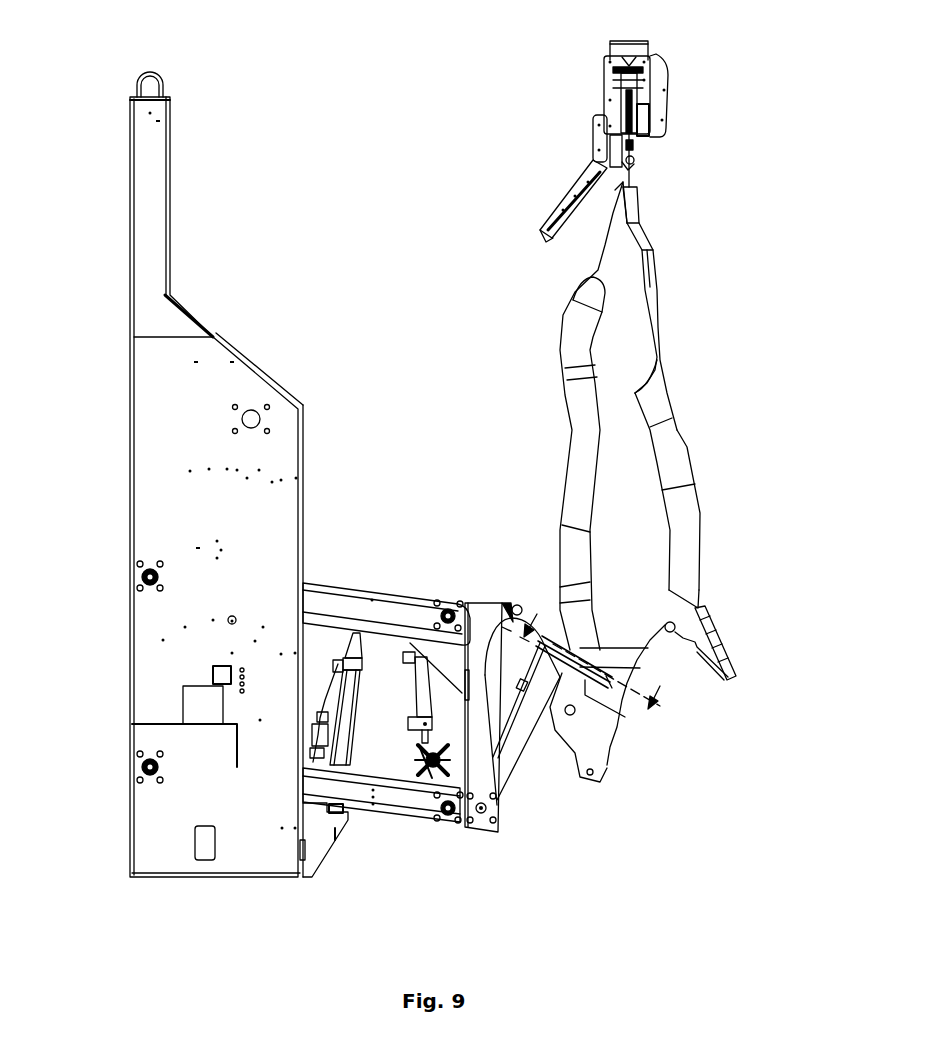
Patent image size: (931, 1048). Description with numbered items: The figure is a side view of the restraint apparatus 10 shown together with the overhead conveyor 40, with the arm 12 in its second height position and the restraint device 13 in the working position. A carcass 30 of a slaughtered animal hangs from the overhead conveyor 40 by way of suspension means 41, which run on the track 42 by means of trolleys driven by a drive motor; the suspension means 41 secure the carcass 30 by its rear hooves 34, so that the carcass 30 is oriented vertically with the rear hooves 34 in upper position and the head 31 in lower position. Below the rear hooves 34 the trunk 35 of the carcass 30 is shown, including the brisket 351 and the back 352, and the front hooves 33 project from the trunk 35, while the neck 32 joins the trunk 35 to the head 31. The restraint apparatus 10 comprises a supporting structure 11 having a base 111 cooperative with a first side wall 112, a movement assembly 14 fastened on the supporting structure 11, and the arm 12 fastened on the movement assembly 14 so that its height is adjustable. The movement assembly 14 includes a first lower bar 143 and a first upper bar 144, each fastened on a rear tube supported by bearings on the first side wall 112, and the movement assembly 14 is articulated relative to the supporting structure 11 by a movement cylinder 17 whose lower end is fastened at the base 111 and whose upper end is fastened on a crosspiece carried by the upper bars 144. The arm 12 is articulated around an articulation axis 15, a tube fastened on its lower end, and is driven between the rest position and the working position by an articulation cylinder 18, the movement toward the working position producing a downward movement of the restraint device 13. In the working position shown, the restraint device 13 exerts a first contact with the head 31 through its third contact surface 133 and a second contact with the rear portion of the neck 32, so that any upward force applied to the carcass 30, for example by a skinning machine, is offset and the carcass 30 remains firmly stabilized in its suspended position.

The restraint apparatus 10 is at (278, 163).
The supporting structure 11 is at (260, 356).
The first side wall 112 is at (157, 445).
The base 111 is at (322, 845).
The movement assembly 14 is at (349, 580).
The first upper bar 144 is at (400, 605).
The first lower bar 143 is at (415, 805).
The articulation axis 15 is at (481, 815).
The movement cylinder 17 is at (350, 688).
The articulation cylinder 18 is at (420, 736).
The arm 12 is at (512, 765).
The restraint device 13 is at (543, 648).
The third contact surface 133 is at (612, 683).
The carcass 30 is at (530, 386).
The rear hooves 34 is at (623, 265).
The trunk 35 is at (567, 458).
The back 352 is at (575, 540).
The brisket 351 is at (695, 535).
The front hooves 33 is at (690, 615).
The neck 32 is at (625, 656).
The head 31 is at (585, 727).
The overhead conveyor 40 is at (686, 62).
The track 42 is at (612, 100).
The suspension means 41 is at (633, 170).